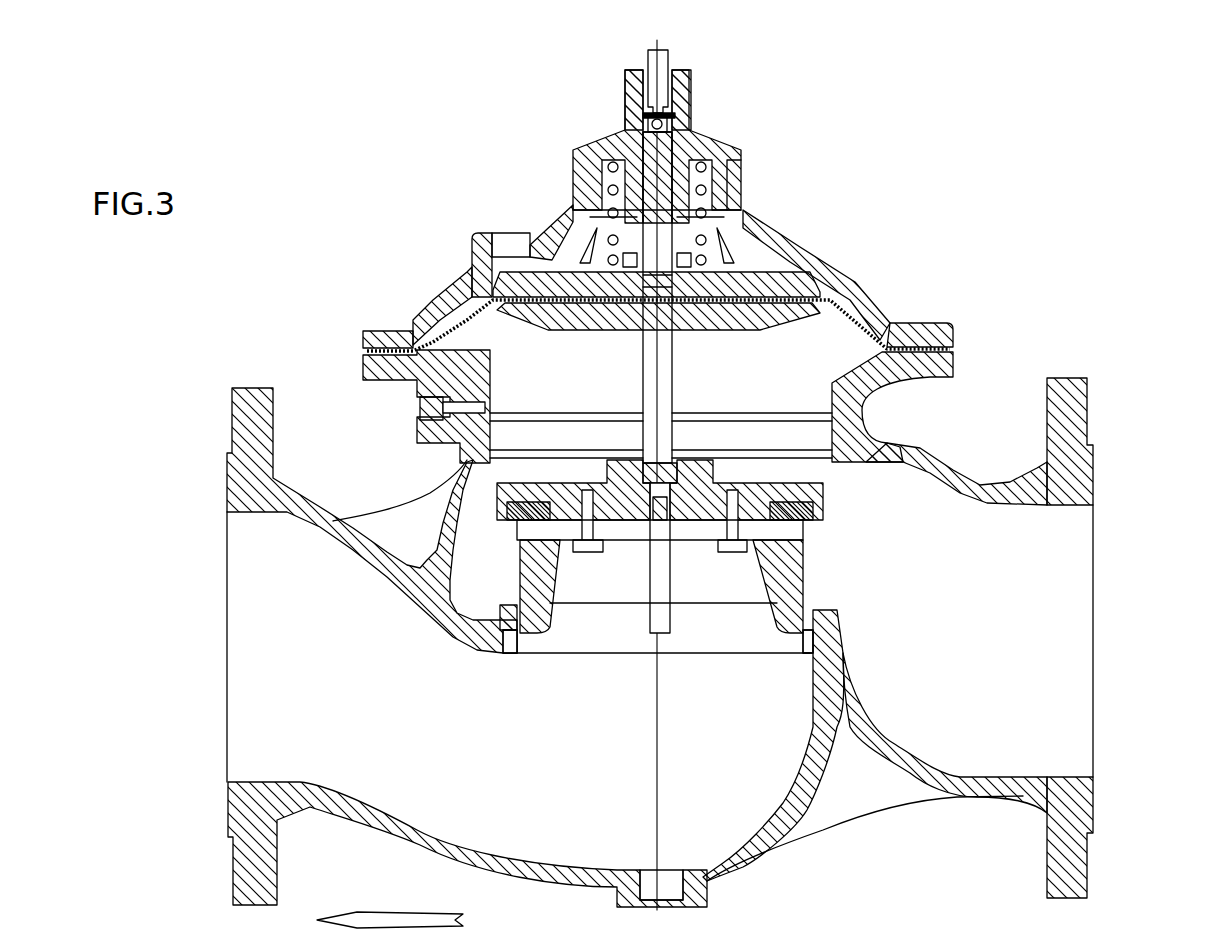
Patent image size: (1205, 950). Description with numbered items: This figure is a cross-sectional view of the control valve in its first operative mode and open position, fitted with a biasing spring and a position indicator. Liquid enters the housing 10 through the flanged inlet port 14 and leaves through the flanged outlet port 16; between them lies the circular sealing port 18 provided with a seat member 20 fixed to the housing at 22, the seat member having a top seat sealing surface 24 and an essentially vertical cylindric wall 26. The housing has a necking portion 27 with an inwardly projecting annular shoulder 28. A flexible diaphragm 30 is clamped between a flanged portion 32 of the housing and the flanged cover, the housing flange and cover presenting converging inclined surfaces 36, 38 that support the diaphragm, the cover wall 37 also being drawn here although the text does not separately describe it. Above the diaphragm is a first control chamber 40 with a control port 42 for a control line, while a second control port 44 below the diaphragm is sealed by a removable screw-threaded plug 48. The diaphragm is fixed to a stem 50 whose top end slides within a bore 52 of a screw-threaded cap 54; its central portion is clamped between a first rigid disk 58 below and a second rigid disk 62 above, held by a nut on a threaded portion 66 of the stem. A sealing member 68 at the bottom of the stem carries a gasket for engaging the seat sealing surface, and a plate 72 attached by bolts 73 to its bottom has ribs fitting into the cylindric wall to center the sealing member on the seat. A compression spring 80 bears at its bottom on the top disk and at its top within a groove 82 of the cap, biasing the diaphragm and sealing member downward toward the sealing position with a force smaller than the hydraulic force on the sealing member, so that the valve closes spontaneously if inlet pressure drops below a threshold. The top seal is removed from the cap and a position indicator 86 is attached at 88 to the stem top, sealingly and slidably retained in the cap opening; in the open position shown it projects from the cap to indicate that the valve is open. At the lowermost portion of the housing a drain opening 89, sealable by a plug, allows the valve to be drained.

The housing 10 is at (1025, 283).
The flanged inlet port 14 is at (227, 637).
The flanged outlet port 16 is at (1093, 623).
The sealing port 18 is at (567, 645).
The seat member 20 is at (807, 617).
The seat member fixing location 22 is at (510, 640).
The top seat sealing surface 24 is at (800, 613).
The vertical cylindric wall 26 is at (783, 633).
The necking portion 27 is at (502, 440).
The inwardly projecting annular shoulder 28 is at (489, 480).
The flexible diaphragm 30 is at (850, 307).
The flanged portion of the housing 32 is at (923, 367).
The inclined surface of flanged portion 36 is at (858, 360).
The casing wall 37 is at (820, 280).
The inclined surface of cover member 38 is at (883, 343).
The first control chamber 40 is at (640, 230).
The control port 42 is at (507, 248).
The second control port 44 is at (455, 437).
The removable screw-threaded plug 48 is at (420, 410).
The stem 50 is at (661, 380).
The bore of cap 52 is at (673, 72).
The screw-threaded cap 54 is at (713, 128).
The first rigid disk 58 is at (540, 333).
The second rigid disk 62 is at (498, 274).
The threaded portion of stem 66 is at (640, 152).
The sealing member 68 is at (850, 465).
The plate 72 is at (632, 533).
The bolts 73 is at (737, 553).
The compression spring 80 is at (712, 217).
The groove of cap 82 is at (745, 163).
The position indicator 86 is at (652, 66).
The position indicator attachment 88 is at (627, 100).
The drain opening 89 is at (657, 883).